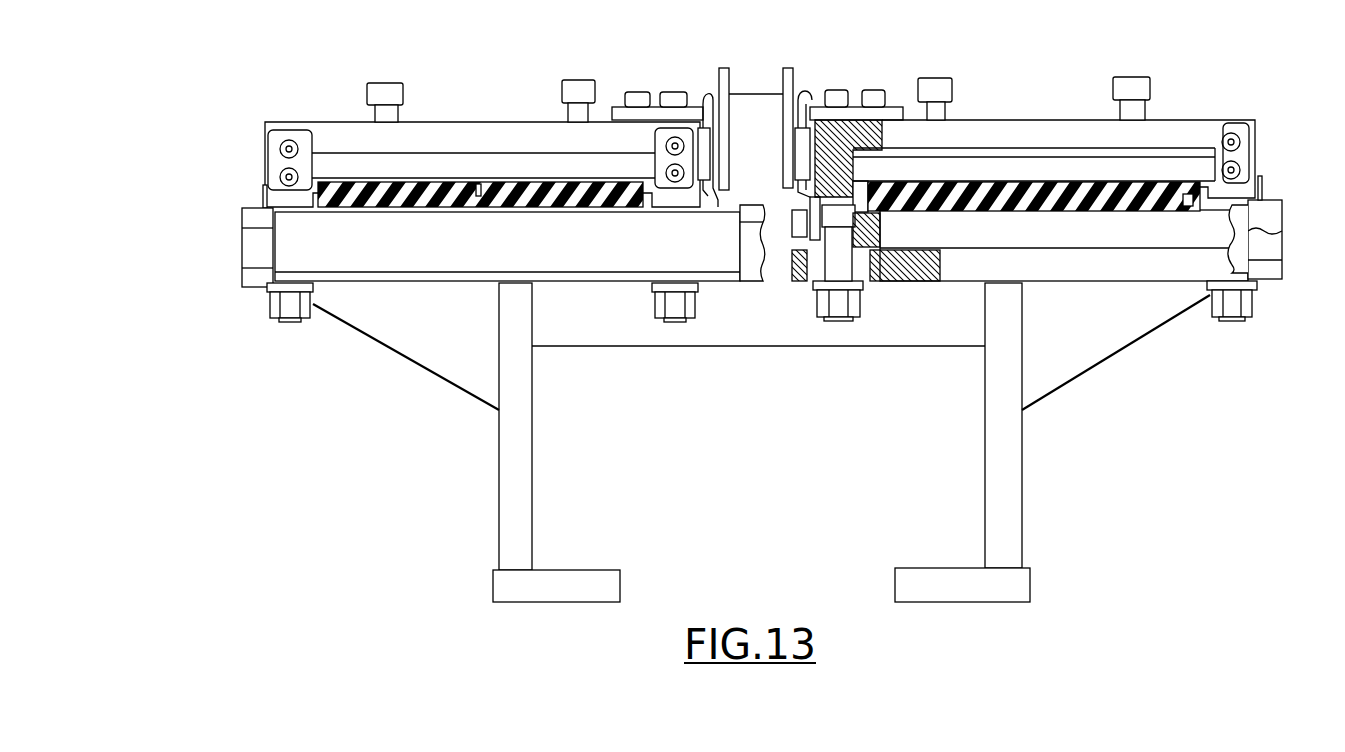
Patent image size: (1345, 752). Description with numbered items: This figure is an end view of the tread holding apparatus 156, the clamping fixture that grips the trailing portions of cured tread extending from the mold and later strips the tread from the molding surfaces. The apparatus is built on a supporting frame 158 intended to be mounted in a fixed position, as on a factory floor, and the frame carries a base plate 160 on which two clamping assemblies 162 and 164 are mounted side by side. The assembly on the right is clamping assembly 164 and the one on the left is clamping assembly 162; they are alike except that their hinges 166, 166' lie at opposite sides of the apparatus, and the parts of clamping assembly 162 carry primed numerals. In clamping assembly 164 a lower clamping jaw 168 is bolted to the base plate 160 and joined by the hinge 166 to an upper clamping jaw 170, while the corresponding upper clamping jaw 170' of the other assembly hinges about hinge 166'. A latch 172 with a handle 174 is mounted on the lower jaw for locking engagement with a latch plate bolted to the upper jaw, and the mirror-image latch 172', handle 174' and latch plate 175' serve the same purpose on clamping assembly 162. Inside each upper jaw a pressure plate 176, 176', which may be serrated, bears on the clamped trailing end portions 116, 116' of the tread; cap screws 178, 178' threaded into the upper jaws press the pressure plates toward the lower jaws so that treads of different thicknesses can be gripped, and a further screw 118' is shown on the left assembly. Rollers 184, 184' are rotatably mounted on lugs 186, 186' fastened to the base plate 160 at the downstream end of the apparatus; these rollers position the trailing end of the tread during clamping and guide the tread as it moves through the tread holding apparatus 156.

The tread holding apparatus 156 is at (1027, 71).
The supporting frame 158 is at (1057, 380).
The base plate 160 is at (1185, 268).
The clamping assembly 162 is at (338, 128).
The clamping assembly 164 is at (1207, 127).
The hinge 166 is at (1296, 196).
The hinge 166' is at (225, 175).
The lower clamping jaw 168 is at (1210, 233).
The upper clamping jaw 170 is at (1159, 126).
The upper clamping jaw 170' is at (480, 114).
The latch 172 is at (847, 145).
The latch 172' is at (694, 118).
The handle 174 is at (817, 110).
The handle 174' is at (752, 112).
The latch plate 175' is at (657, 84).
The pressure plate 176 is at (1014, 125).
The pressure plate 176' is at (483, 128).
The cap screws 178 is at (1052, 77).
The cap screws 178' is at (395, 75).
The trailing portion of first section of tread 116 is at (1086, 187).
The trailing end portion of tread 116' is at (478, 145).
The bolt 118' is at (594, 76).
The rollers 184 is at (1284, 295).
The rollers 184' is at (507, 246).
The lugs 186 is at (997, 264).
The lugs 186' is at (240, 265).